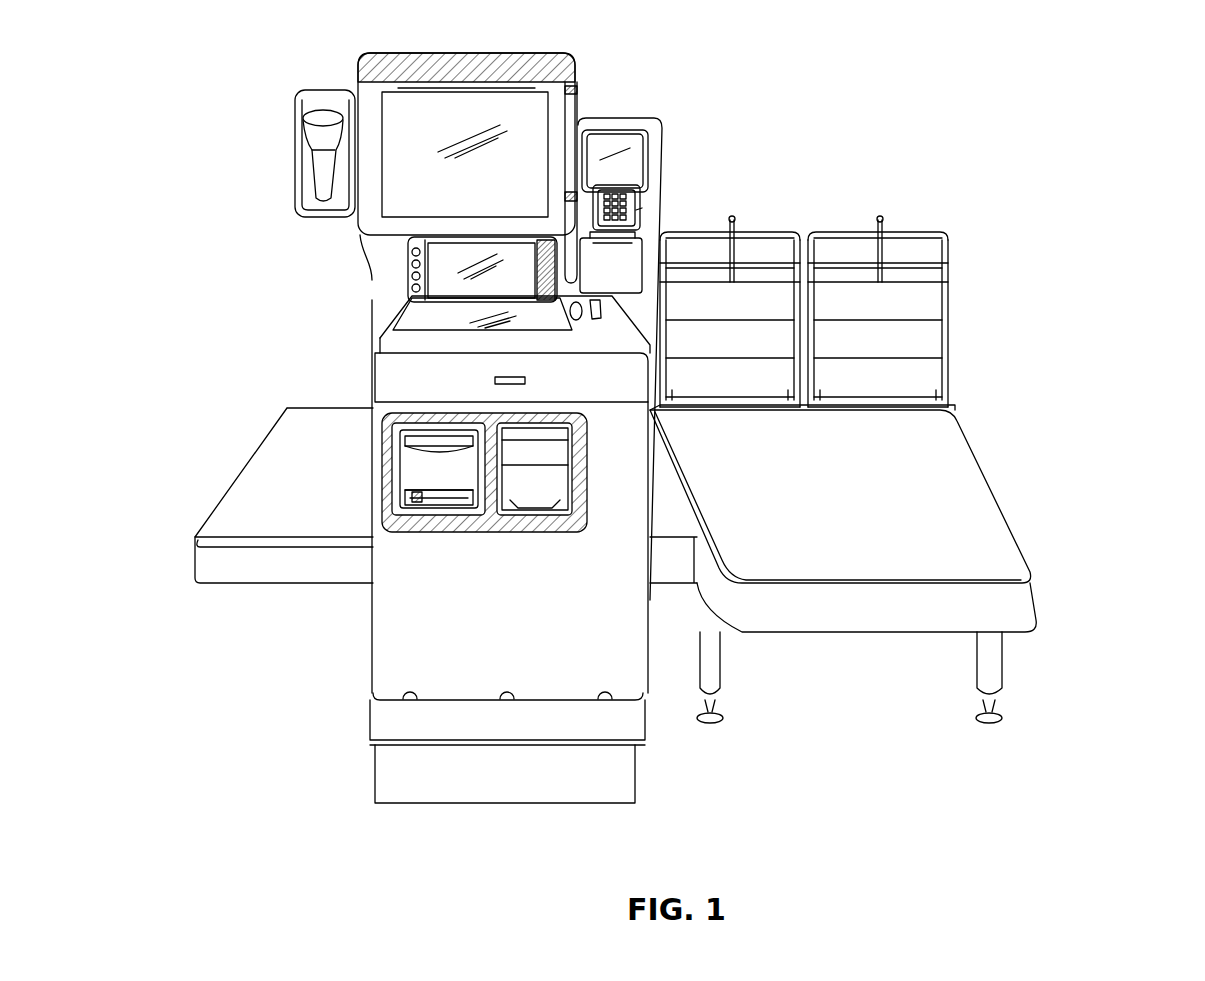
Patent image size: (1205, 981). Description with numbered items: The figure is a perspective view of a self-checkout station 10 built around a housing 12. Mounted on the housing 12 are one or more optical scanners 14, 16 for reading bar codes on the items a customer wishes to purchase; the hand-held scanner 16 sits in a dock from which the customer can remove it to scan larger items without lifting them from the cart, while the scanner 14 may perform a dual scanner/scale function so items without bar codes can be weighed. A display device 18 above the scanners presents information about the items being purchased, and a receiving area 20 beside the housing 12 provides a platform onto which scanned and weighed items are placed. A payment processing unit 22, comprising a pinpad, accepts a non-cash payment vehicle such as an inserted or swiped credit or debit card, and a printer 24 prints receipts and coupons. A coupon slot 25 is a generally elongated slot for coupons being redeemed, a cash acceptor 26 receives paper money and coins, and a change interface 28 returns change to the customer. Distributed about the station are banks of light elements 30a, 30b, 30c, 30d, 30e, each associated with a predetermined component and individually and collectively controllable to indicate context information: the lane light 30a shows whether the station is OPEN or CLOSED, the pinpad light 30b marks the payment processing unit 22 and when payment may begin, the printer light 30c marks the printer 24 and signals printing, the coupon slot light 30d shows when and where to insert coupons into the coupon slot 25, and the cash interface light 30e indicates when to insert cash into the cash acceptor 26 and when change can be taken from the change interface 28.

The self-checkout (SCO) station 10 is at (1130, 100).
The housing 12 is at (520, 630).
The optical scanner 14 is at (430, 268).
The hand-held scanner 16 is at (322, 160).
The display device 18 is at (491, 191).
The receiving area 20 is at (841, 507).
The payment processing unit 22 is at (648, 182).
The printer 24 is at (622, 270).
The coupon slot 25 is at (600, 306).
The cash acceptor 26 is at (418, 465).
The change interface 28 is at (540, 455).
The lane light element 30a is at (513, 53).
The pinpad light element 30b is at (577, 108).
The printer light element 30c is at (567, 213).
The coupon slot light element 30d is at (657, 406).
The cash interface light element 30e is at (432, 530).